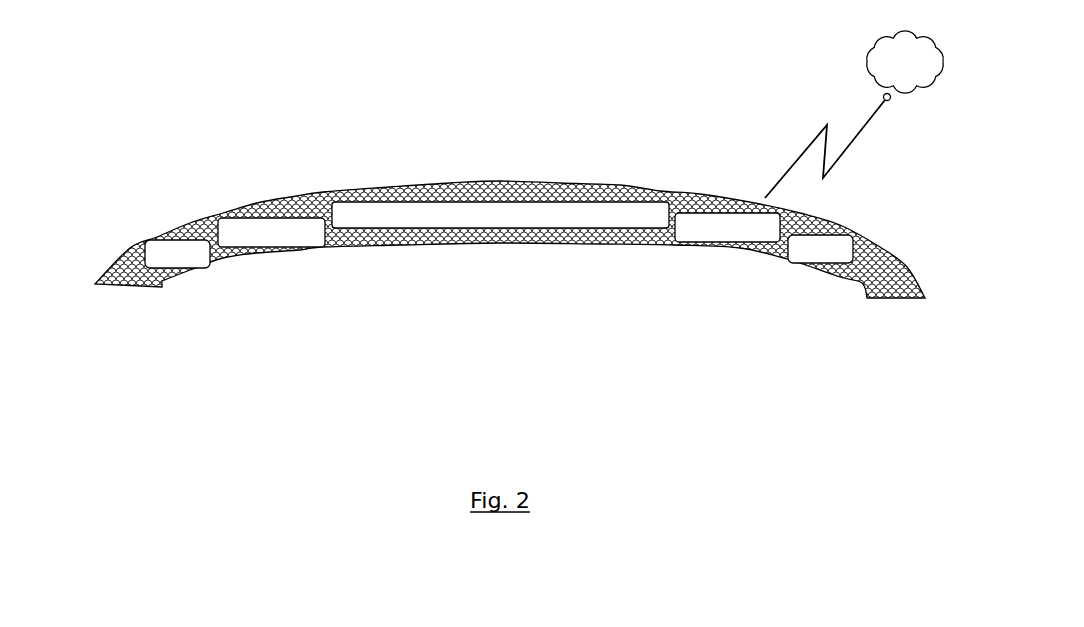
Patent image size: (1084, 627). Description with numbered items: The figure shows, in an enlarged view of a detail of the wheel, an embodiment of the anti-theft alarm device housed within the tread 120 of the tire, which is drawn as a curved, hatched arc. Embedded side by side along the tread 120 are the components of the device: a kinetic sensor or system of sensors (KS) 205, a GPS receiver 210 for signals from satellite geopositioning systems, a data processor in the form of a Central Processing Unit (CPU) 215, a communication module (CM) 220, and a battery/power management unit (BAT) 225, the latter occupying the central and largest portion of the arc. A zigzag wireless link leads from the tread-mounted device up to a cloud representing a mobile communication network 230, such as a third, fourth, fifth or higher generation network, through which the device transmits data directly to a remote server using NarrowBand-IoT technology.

The tread 120 is at (290, 198).
The kinetic sensor or system of sensors (KS) 205 is at (268, 255).
The GPS receiver 210 is at (143, 285).
The Central Processing Unit (CPU) 215 is at (813, 267).
The communication module (CM) 220 is at (720, 248).
The battery/power management unit (BAT) 225 is at (530, 222).
The mobile communication network 230 is at (920, 76).